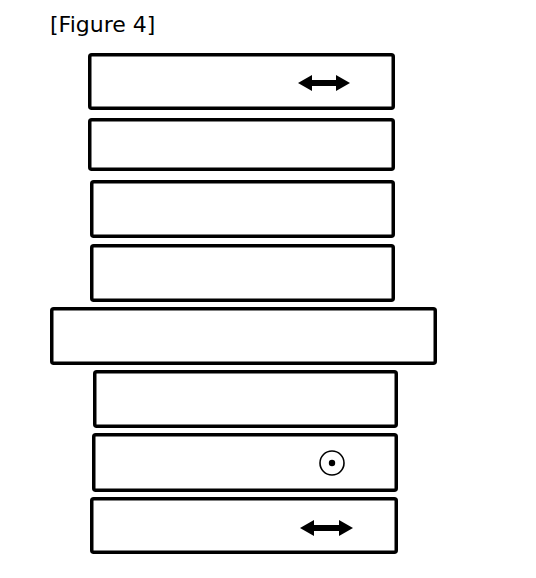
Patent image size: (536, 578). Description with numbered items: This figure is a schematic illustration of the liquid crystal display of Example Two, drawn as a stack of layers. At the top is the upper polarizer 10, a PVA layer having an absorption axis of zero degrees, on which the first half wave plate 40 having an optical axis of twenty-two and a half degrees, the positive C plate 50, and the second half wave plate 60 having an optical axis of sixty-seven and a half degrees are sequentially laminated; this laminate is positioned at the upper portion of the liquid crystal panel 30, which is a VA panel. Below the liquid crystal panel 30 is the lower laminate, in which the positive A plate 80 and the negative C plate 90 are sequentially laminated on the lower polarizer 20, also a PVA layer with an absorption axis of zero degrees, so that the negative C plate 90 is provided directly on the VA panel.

The upper polarizer 10 is at (242, 82).
The lower polarizer 20 is at (244, 526).
The liquid crystal panel 30 is at (244, 336).
The first half wave plate 40 is at (242, 145).
The positive C plate 50 is at (243, 209).
The second half wave plate 60 is at (243, 273).
The positive A plate 80 is at (245, 463).
The negative C plate 90 is at (246, 399).